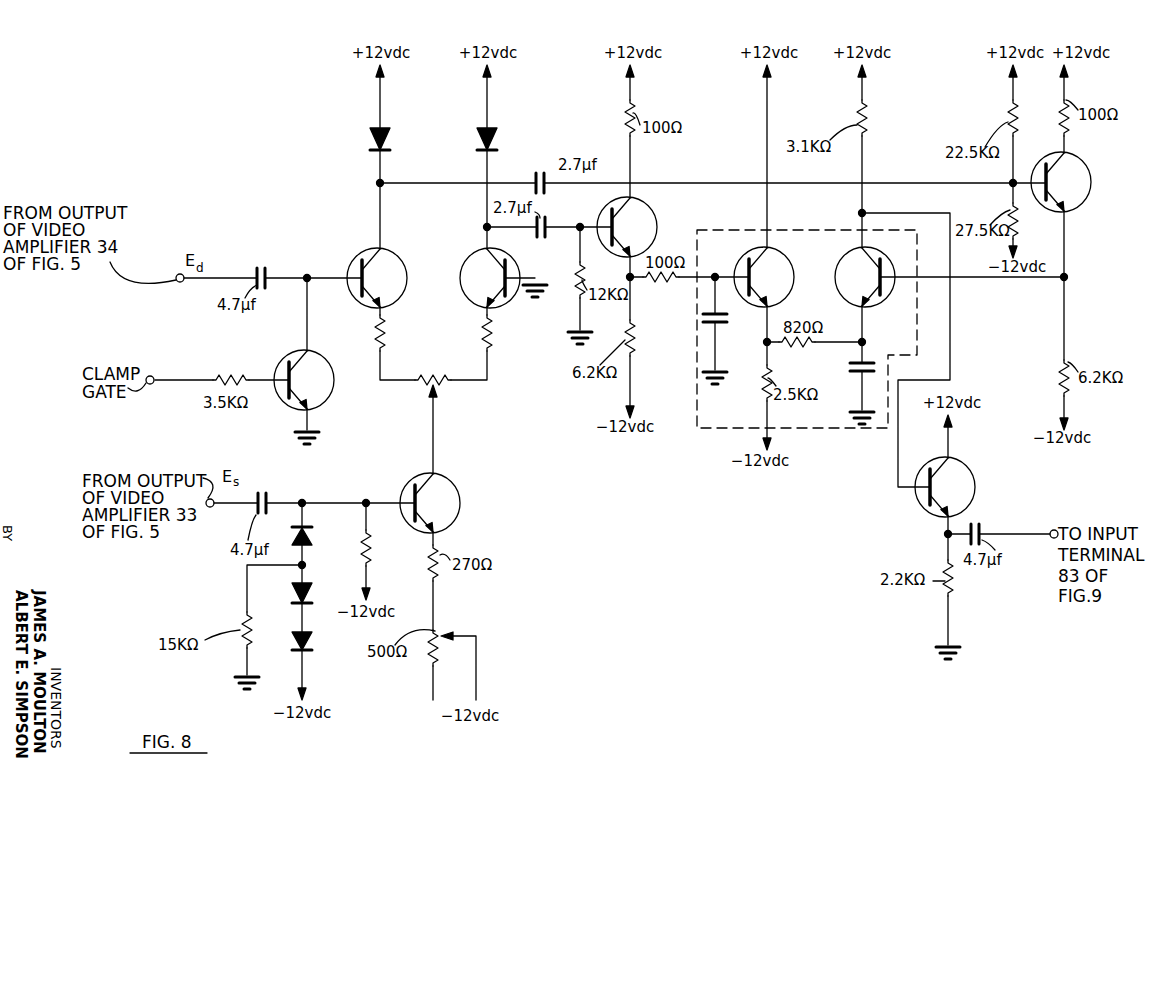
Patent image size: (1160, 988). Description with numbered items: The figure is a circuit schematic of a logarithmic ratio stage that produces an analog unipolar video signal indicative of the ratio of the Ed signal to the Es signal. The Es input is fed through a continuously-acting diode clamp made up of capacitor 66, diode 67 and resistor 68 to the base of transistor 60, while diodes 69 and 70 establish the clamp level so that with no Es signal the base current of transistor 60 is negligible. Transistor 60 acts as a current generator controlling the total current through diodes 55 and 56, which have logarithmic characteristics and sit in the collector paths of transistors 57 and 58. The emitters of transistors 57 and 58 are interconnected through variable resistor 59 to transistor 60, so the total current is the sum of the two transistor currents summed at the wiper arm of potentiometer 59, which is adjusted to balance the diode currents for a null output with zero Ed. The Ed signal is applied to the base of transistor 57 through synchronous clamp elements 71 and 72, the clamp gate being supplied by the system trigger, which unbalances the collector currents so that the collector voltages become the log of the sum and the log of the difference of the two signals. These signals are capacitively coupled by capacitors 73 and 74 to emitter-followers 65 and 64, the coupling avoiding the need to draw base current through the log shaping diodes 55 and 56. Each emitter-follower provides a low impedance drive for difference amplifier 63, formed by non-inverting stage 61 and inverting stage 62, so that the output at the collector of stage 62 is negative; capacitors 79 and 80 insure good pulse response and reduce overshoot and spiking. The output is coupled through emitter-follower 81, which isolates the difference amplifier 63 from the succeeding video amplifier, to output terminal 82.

The diode 55 is at (388, 138).
The diode 56 is at (492, 132).
The transistor 57 is at (355, 300).
The transistor 58 is at (462, 290).
The variable resistor 59 is at (440, 378).
The transistor 60 is at (440, 495).
The non-inverting stage 61 is at (768, 282).
The inverting stage 62 is at (845, 278).
The difference amplifier 63 is at (738, 432).
The emitter-follower 64 is at (1080, 188).
The emitter-follower 65 is at (652, 224).
The capacitor 66 is at (270, 498).
The diode 67 is at (312, 538).
The resistor 68 is at (372, 548).
The diode 69 is at (292, 594).
The diode 70 is at (312, 642).
The synchronous clamp element 71 is at (258, 273).
The synchronous clamp element 72 is at (316, 392).
The capacitive coupling 73 is at (536, 172).
The capacitive coupling 74 is at (543, 238).
The capacitor 79 is at (702, 320).
The capacitor 80 is at (846, 366).
The emitter-follower 81 is at (957, 491).
The terminal 82 is at (1055, 527).